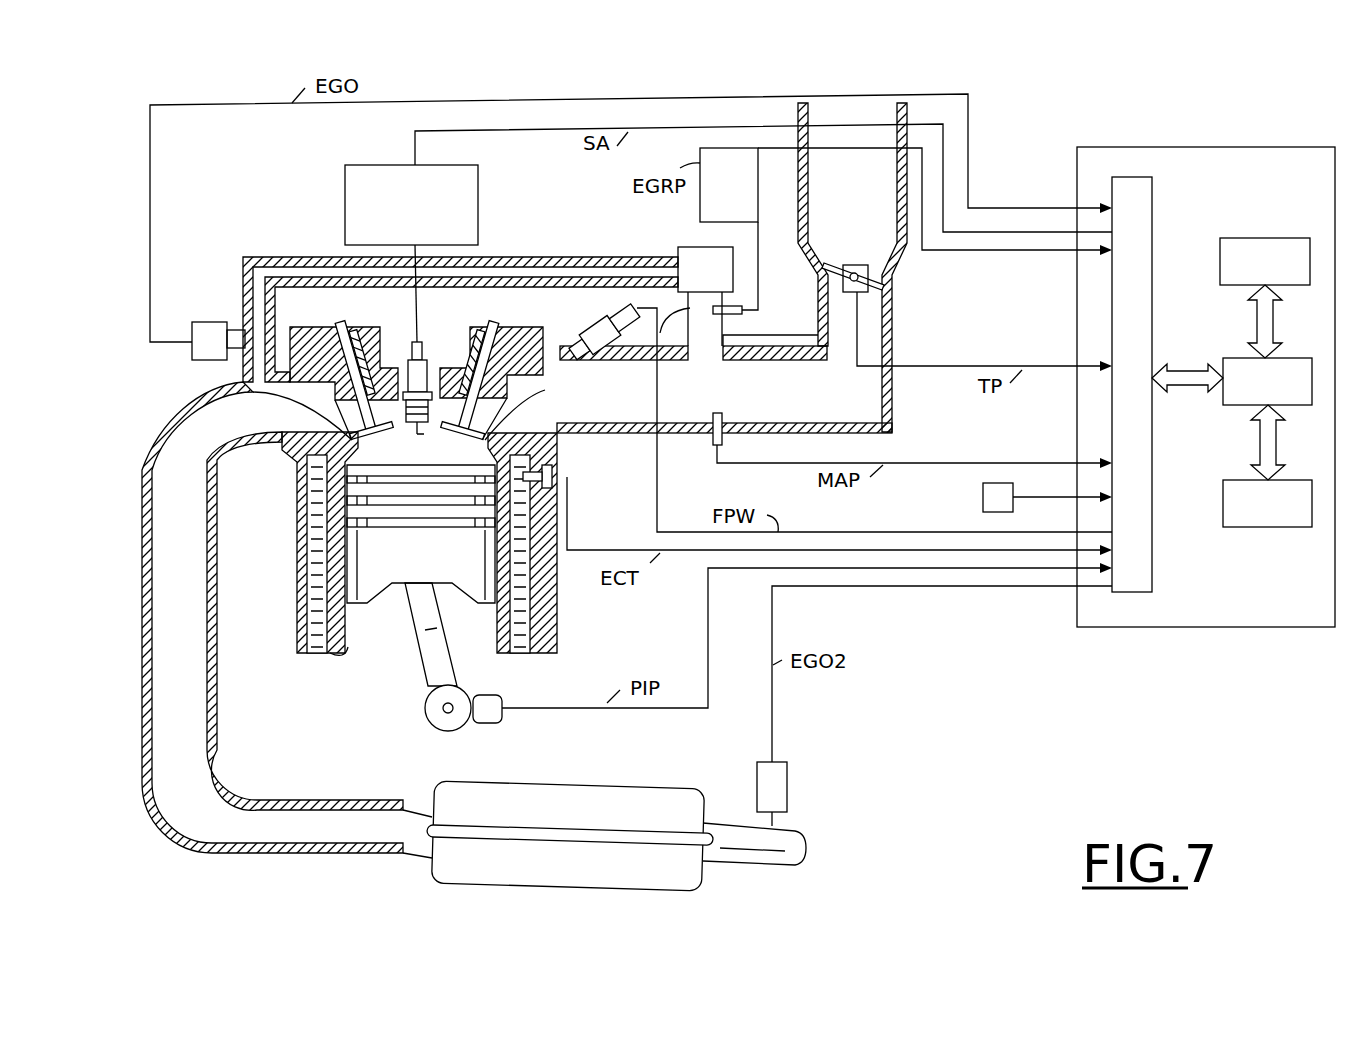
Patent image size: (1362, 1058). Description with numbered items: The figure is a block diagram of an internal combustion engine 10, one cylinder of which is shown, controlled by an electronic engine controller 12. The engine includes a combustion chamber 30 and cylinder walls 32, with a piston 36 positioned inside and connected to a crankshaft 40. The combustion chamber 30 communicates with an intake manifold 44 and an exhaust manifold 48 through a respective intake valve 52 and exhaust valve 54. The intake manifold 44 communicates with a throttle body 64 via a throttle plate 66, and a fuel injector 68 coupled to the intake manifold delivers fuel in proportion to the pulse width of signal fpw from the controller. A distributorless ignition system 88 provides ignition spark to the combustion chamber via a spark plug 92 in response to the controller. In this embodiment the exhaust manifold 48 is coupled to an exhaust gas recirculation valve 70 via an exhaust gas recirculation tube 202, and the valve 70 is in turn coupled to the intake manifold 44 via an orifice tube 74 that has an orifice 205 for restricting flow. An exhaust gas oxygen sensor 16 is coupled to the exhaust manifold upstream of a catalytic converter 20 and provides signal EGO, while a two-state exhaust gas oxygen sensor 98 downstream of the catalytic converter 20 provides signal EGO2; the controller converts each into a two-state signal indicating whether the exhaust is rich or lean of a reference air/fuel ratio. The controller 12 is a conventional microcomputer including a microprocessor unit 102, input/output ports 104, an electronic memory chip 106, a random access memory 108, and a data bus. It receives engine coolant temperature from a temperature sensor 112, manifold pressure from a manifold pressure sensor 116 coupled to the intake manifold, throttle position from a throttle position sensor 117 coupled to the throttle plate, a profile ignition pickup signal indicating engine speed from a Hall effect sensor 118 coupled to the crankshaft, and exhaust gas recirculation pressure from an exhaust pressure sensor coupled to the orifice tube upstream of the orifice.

The internal combustion engine 10 is at (265, 250).
The electronic engine controller 12 is at (1212, 147).
The exhaust gas oxygen sensor 16 is at (200, 322).
The catalytic converter 20 is at (578, 783).
The combustion chamber 30 is at (387, 455).
The cylinder walls 32 is at (343, 652).
The piston 36 is at (406, 572).
The crankshaft 40 is at (425, 706).
The intake manifold 44 is at (835, 403).
The exhaust manifold 48 is at (177, 460).
The intake valve 52 is at (490, 412).
The exhaust valve 54 is at (345, 418).
The throttle body 64 is at (822, 170).
The throttle plate 66 is at (833, 262).
The fuel injector 68 is at (603, 318).
The exhaust gas recirculation valve 70 is at (688, 246).
The orifice tube 74 is at (634, 360).
The distributorless ignition system 88 is at (479, 203).
The spark plug 92 is at (421, 342).
The two-state exhaust gas oxygen sensor 98 is at (788, 776).
The microprocessor unit 102 is at (1232, 358).
The input/output ports 104 is at (1152, 184).
The electronic memory chip 106 is at (1277, 233).
The random access memory 108 is at (1288, 527).
The temperature sensor 112 is at (553, 466).
The manifold pressure sensor 116 is at (710, 438).
The throttle position sensor 117 is at (887, 306).
The Hall effect sensor 118 is at (500, 695).
The exhaust gas recirculation tube 202 is at (517, 252).
The orifice 205 is at (705, 337).